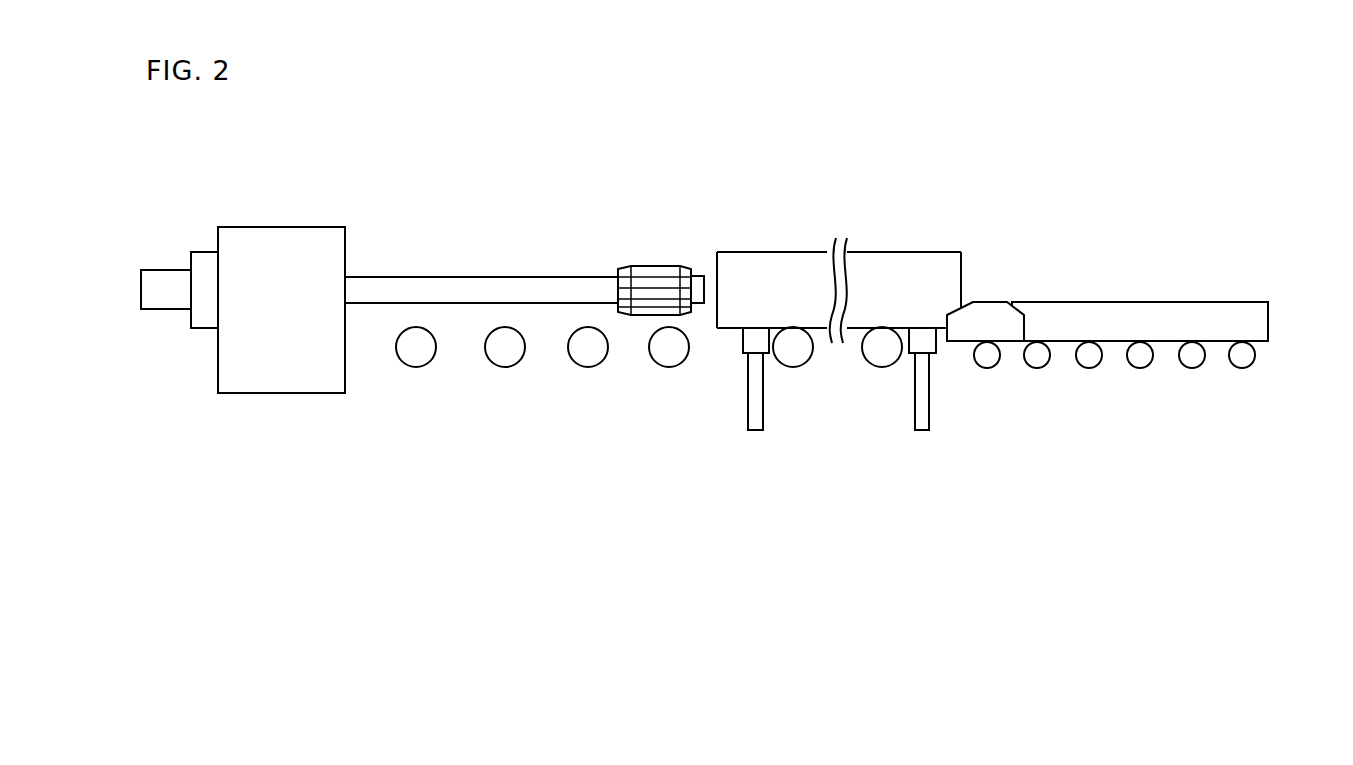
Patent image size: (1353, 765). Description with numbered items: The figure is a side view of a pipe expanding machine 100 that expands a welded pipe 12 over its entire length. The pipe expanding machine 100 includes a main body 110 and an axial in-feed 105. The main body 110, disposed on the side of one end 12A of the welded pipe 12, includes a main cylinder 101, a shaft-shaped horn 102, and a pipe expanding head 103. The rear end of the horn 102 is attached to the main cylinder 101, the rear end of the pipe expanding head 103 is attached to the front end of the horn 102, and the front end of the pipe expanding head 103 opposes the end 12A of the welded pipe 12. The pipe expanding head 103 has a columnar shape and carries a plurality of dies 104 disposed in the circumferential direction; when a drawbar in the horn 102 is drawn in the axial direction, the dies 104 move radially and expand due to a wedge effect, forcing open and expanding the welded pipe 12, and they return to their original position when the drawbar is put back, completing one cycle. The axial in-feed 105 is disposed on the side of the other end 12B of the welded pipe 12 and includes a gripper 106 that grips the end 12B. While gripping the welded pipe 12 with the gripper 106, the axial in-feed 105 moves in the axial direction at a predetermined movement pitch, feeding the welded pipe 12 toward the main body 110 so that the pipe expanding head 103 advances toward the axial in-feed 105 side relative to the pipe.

The pipe expanding machine 100 is at (743, 106).
The main body 110 is at (240, 224).
The main cylinder 101 is at (288, 248).
The horn 102 is at (489, 293).
The pipe expanding head 103 is at (643, 256).
The dies 104 is at (662, 283).
The welded pipe 12 is at (800, 252).
The one end of the welded pipe 12A is at (717, 252).
The other end of the welded pipe 12B is at (961, 252).
The axial in-feed 105 is at (1118, 299).
The gripper 106 is at (982, 318).